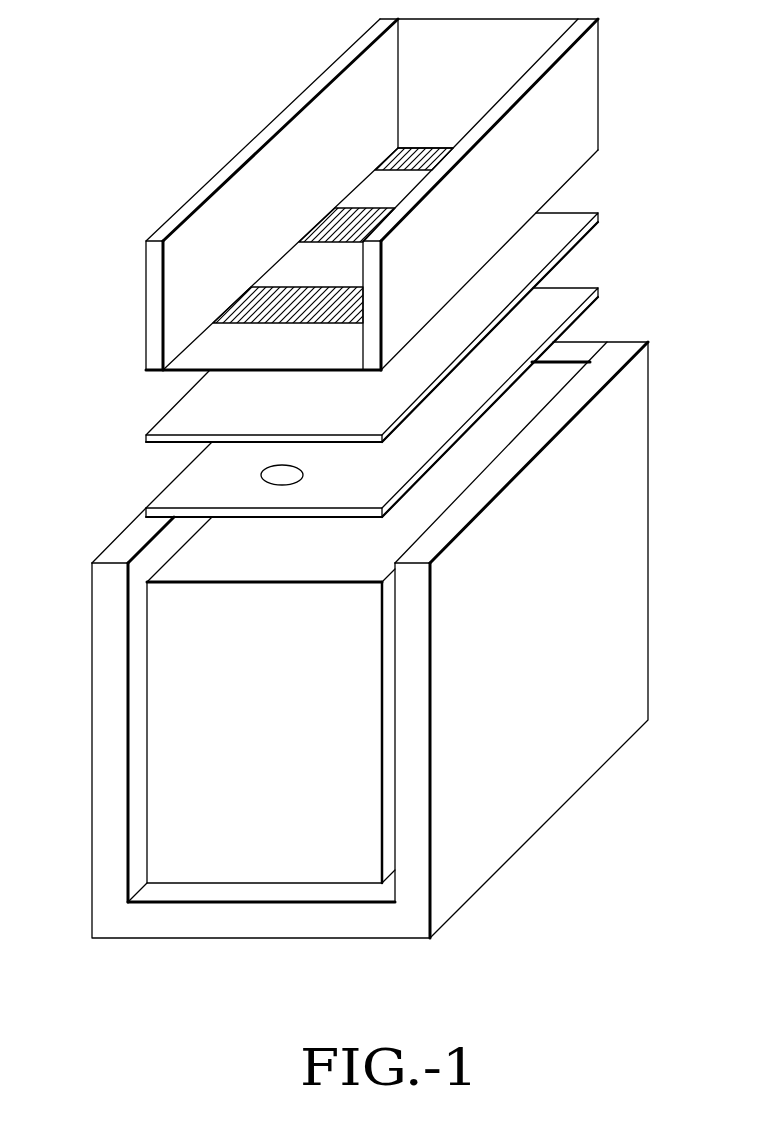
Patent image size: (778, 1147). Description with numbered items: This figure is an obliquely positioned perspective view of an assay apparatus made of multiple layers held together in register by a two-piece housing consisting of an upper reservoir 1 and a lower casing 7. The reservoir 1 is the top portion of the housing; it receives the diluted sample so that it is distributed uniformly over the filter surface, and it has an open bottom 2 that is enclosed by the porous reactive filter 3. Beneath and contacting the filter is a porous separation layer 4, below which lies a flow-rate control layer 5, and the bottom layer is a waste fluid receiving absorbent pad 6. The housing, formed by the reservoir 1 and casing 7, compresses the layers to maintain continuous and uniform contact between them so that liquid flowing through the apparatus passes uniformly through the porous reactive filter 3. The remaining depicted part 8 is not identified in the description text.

The upper reservoir 1 is at (553, 121).
The open bottom 2 is at (583, 166).
The porous reactive filter 3 is at (256, 372).
The porous separation layer 4 is at (228, 424).
The flow-rate control layer 5 is at (223, 488).
The waste fluid receiving absorbent pad 6 is at (204, 742).
The lower casing 7 is at (513, 742).
The floor with electrodes 8 is at (255, 350).